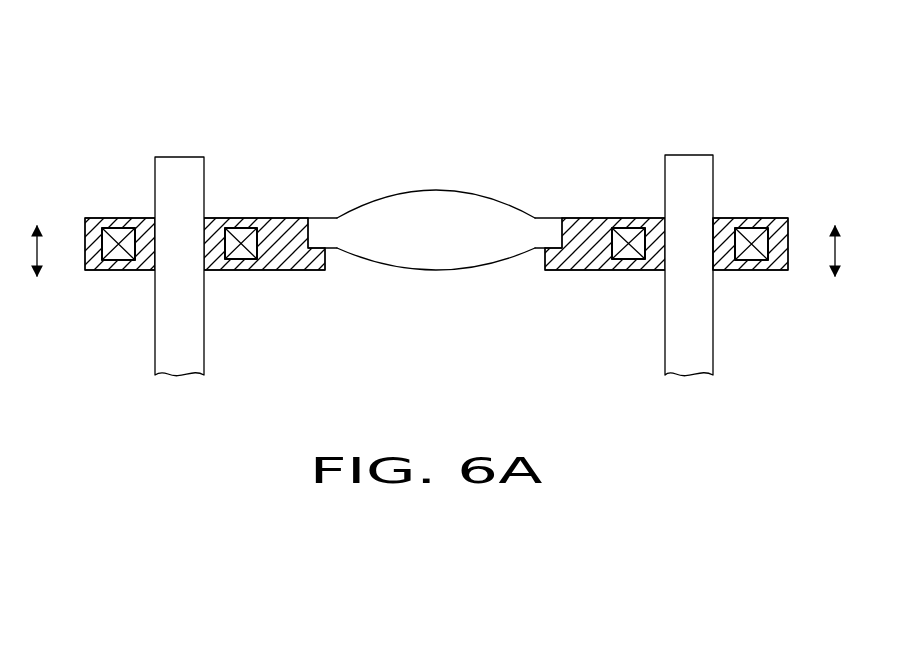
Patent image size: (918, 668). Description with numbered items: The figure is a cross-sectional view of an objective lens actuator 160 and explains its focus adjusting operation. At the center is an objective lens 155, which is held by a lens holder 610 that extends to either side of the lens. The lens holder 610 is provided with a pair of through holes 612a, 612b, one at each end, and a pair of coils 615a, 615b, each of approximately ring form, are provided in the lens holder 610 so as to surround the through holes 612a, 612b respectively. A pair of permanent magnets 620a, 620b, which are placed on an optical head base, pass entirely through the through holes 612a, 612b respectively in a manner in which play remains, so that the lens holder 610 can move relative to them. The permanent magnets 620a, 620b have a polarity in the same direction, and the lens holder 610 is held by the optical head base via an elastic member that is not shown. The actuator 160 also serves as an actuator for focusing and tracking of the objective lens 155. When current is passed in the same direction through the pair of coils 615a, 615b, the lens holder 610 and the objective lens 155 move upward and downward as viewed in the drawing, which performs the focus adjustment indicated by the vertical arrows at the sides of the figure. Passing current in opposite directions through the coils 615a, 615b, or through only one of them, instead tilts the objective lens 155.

The actuator 160 is at (120, 105).
The objective lens 155 is at (435, 192).
The lens holder 610 is at (268, 222).
The through hole 612a is at (150, 218).
The through hole 612b is at (716, 216).
The coil 615a is at (120, 262).
The coil 615b is at (752, 260).
The permanent magnet 620a is at (180, 157).
The permanent magnet 620b is at (685, 155).